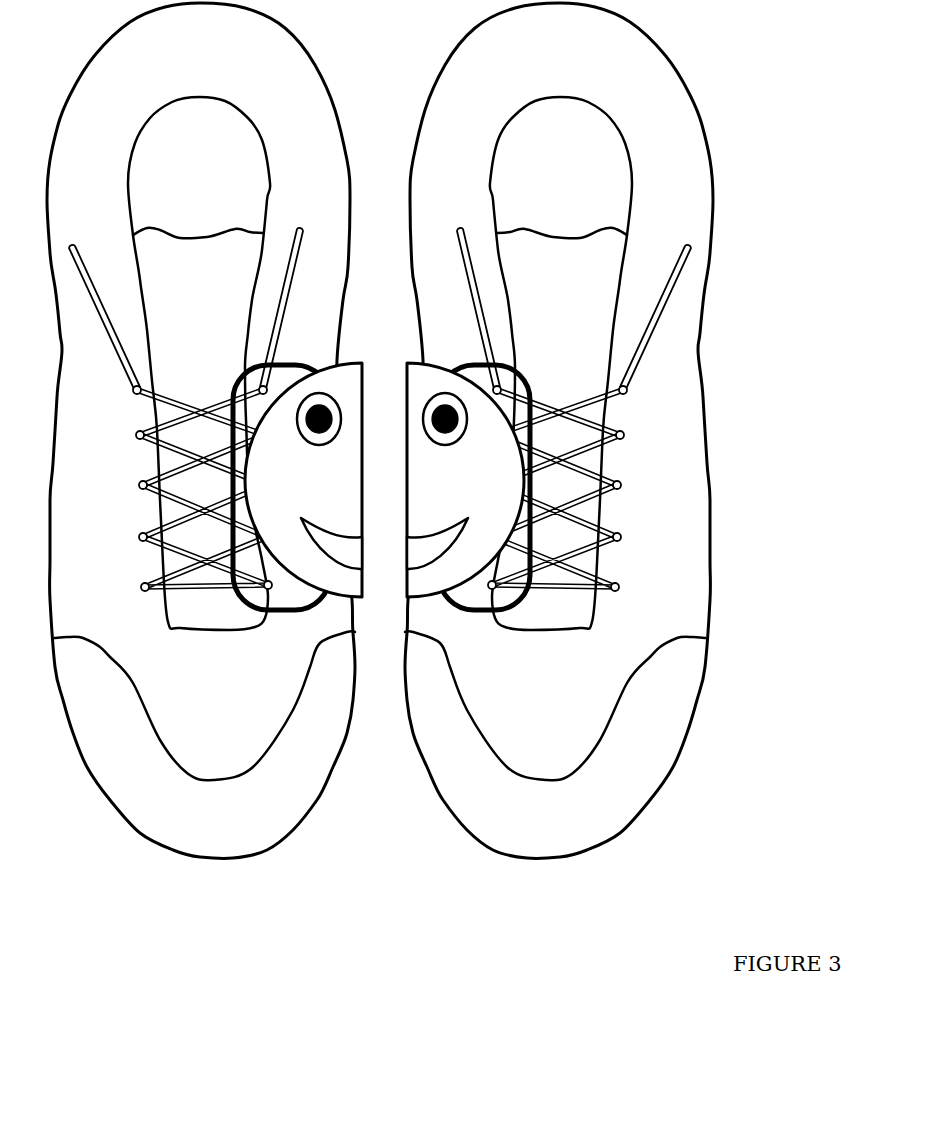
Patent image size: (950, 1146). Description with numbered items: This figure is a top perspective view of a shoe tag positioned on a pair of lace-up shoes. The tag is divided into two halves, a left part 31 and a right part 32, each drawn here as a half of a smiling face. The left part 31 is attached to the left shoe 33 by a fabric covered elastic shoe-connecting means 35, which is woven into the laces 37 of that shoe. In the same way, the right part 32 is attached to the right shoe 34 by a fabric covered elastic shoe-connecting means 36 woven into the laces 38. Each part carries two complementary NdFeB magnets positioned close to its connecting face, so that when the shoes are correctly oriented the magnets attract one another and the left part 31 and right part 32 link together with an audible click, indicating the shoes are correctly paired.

The left part 31 is at (340, 363).
The right part 32 is at (423, 593).
The left shoe 33 is at (205, 860).
The right shoe 34 is at (543, 862).
The fabric covered elastic shoe-connecting means 35 is at (290, 363).
The fabric covered elastic shoe-connecting means 36 is at (481, 612).
The laces 37 is at (152, 407).
The laces 38 is at (617, 407).